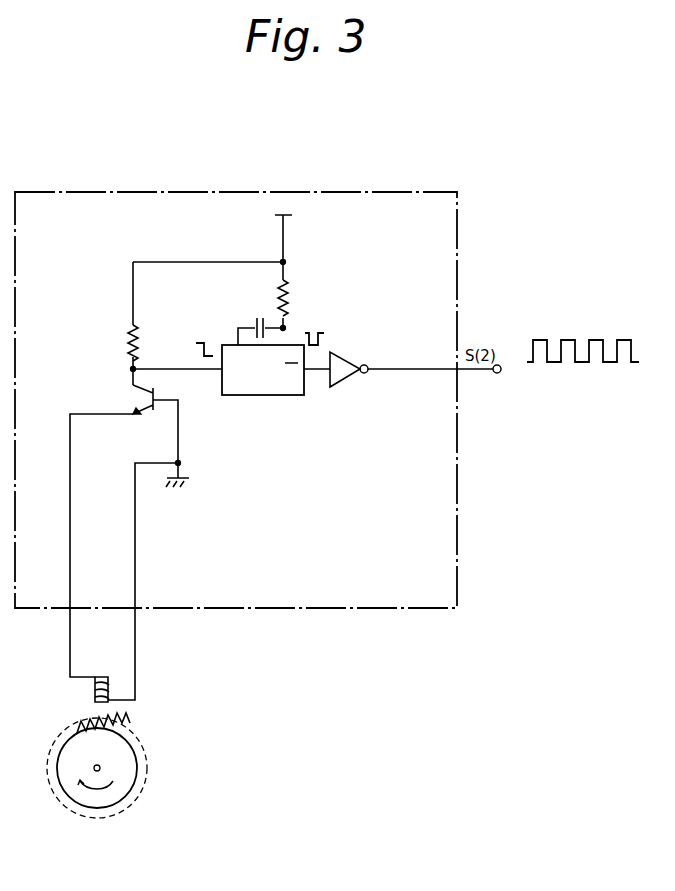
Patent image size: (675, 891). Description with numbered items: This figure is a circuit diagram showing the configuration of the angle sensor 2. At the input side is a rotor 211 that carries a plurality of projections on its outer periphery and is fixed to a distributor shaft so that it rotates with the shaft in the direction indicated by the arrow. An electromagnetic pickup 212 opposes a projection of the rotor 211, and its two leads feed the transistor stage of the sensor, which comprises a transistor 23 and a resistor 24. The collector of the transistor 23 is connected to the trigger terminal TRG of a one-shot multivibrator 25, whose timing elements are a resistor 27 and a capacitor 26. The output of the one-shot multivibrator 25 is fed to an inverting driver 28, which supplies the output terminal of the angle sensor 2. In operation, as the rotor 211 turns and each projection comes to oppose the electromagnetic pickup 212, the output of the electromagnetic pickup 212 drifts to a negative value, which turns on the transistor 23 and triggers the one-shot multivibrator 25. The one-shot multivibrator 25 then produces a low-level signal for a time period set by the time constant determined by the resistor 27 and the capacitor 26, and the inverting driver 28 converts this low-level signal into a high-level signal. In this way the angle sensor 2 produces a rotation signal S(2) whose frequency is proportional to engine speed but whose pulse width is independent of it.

The angle sensor 2 is at (452, 260).
The transistor 23 is at (138, 398).
The resistor 24 is at (129, 336).
The one-shot multivibrator 25 is at (252, 397).
The capacitor 26 is at (254, 318).
The resistor 27 is at (296, 290).
The inverting driver 28 is at (346, 386).
The rotor 211 is at (132, 788).
The electromagnetic pickup 212 is at (92, 692).